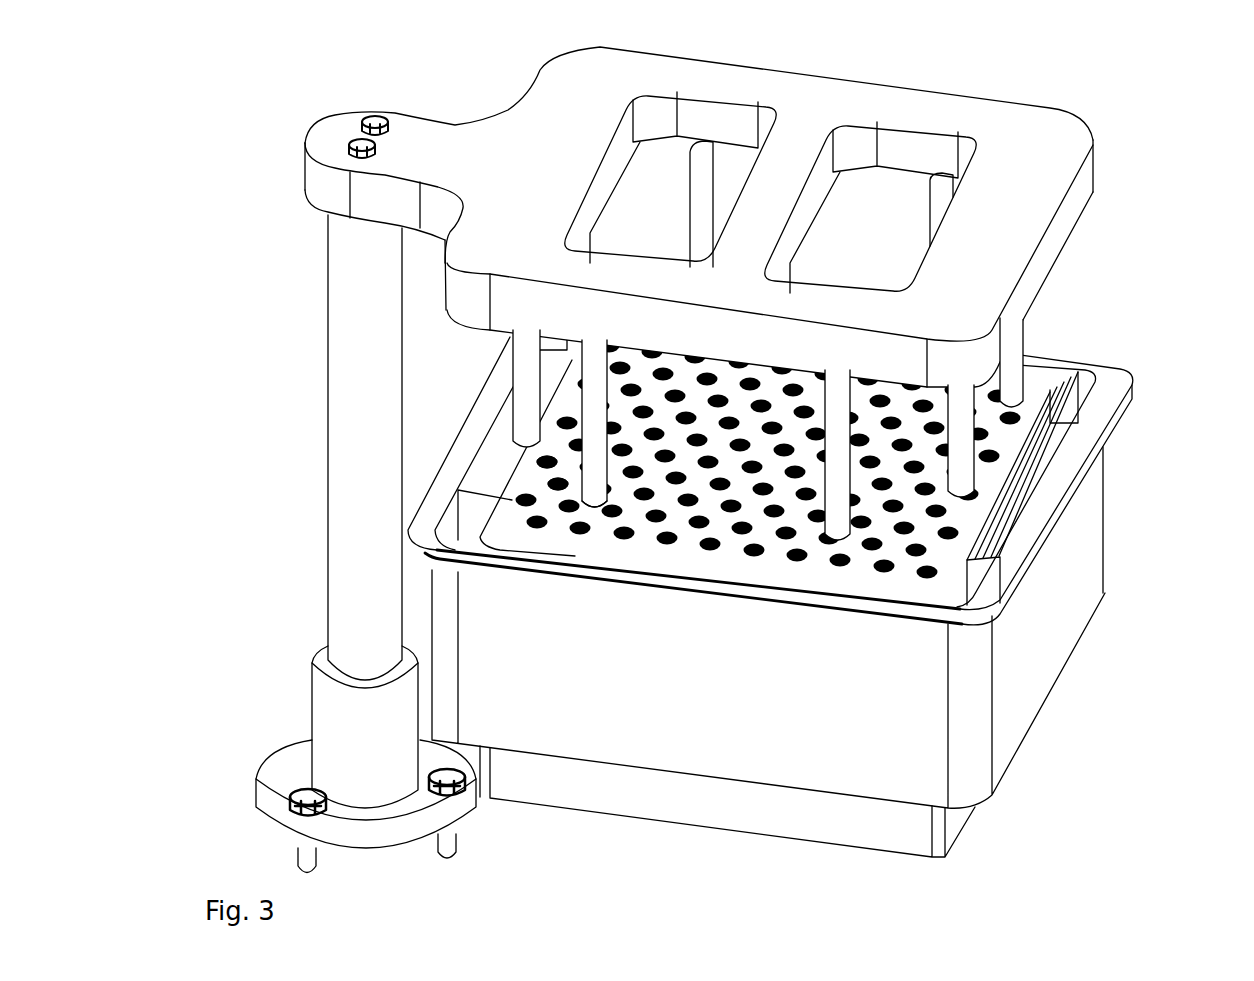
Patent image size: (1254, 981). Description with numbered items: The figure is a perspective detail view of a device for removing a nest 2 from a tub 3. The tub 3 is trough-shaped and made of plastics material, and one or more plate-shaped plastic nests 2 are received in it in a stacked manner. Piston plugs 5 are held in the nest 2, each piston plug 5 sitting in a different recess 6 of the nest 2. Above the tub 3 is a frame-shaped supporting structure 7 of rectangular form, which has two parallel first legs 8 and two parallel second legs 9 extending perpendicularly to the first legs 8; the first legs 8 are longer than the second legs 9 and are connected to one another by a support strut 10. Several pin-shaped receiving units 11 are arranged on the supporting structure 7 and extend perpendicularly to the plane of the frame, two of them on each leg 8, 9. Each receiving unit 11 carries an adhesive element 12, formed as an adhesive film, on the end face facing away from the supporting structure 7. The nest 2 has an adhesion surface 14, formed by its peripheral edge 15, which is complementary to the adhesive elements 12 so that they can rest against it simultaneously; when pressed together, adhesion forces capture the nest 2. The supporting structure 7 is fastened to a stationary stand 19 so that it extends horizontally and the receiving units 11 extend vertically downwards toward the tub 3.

The nest 2 is at (1000, 520).
The tub 3 is at (1023, 677).
The piston plug 5 is at (573, 487).
The recess 6 is at (540, 462).
The supporting structure 7 is at (492, 247).
The first leg 8 is at (847, 316).
The second leg 9 is at (583, 148).
The support strut 10 is at (772, 198).
The receiving unit 11 is at (700, 203).
The adhesive element 12 is at (592, 507).
The adhesion surface 14 is at (827, 573).
The peripheral edge 15 is at (915, 580).
The stand 19 is at (350, 568).